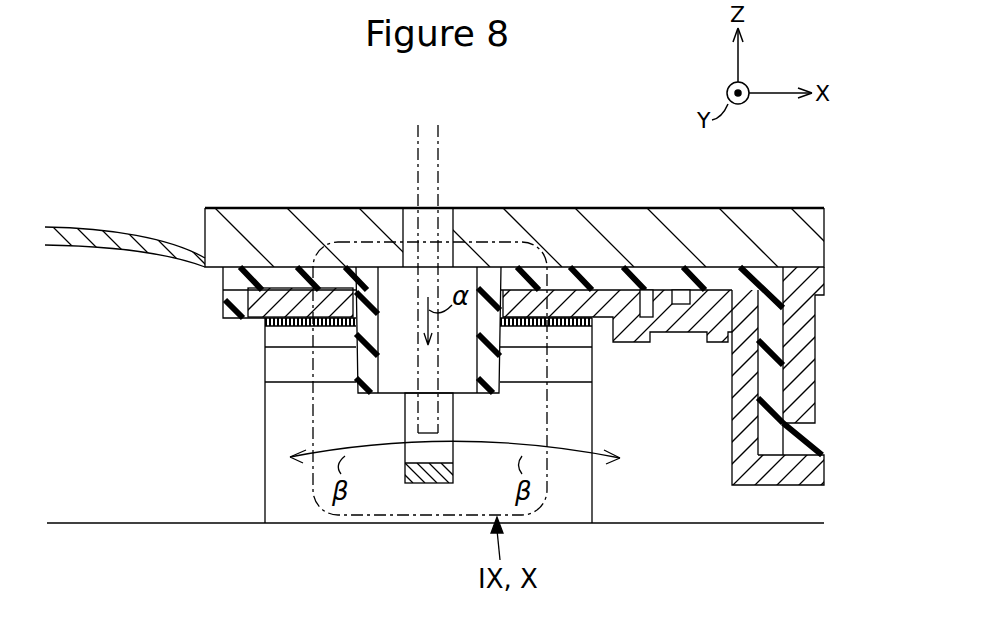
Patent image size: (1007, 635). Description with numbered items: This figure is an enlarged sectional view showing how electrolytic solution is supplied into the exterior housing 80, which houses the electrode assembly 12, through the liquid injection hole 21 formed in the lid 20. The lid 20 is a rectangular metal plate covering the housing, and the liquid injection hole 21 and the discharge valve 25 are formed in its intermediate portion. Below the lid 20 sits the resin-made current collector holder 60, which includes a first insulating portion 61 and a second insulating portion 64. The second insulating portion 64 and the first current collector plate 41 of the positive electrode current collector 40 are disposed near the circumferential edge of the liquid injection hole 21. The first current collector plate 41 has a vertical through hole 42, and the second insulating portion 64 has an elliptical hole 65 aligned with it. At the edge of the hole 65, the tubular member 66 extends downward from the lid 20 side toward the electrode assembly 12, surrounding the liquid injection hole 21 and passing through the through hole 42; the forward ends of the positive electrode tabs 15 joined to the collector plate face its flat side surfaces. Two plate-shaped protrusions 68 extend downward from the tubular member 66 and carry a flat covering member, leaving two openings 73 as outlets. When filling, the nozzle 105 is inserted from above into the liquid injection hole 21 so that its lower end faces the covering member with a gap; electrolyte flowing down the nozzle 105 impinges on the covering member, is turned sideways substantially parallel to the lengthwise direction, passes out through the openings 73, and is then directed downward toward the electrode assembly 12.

The electrode assembly 12 is at (207, 545).
The positive electrode tab 15 is at (575, 412).
The lid 20 is at (243, 207).
The liquid injection hole 21 is at (407, 227).
The discharge valve 25 is at (130, 227).
The positive electrode current collector 40 is at (575, 300).
The first current collector plate 41 is at (270, 300).
The through hole 42 is at (352, 289).
The current collector holder 60 is at (715, 266).
The first insulating portion 61 is at (780, 490).
The second insulating portion 64 is at (272, 266).
The hole 65 is at (478, 292).
The tubular member 66 is at (350, 353).
The protrusion 68 is at (455, 418).
The opening 73 is at (404, 417).
The exterior housing 80 is at (125, 506).
The nozzle 105 is at (440, 142).